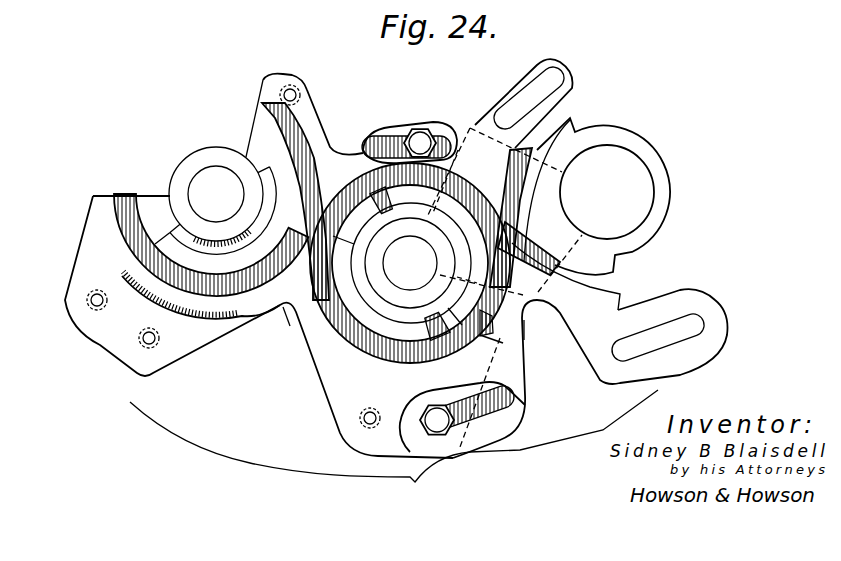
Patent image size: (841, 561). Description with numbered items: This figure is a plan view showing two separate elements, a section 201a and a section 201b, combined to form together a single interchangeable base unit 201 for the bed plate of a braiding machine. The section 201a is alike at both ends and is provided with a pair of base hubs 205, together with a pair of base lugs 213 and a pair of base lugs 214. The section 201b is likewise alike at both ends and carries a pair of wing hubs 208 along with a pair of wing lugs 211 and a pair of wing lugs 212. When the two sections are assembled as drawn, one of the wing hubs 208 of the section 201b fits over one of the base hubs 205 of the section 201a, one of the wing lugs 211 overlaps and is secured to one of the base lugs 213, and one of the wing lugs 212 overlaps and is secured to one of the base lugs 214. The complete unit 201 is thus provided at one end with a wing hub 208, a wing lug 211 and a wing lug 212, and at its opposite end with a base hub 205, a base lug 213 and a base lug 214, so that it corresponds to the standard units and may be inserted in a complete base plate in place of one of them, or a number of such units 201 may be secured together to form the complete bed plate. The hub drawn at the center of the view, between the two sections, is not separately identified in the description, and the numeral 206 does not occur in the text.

The interchangeable unit 201 is at (394, 448).
The element 201a is at (257, 342).
The element 201b is at (528, 345).
The base hub 205 is at (182, 164).
The central hub 206 is at (443, 227).
The wing hub 208 is at (653, 143).
The wing lug 211 is at (380, 127).
The wing lug 212 is at (527, 392).
The base lug 213 is at (317, 103).
The base lug 214 is at (160, 365).